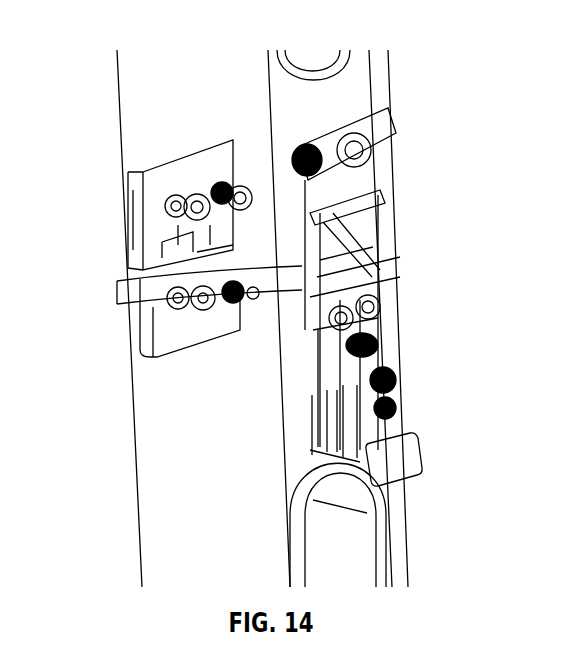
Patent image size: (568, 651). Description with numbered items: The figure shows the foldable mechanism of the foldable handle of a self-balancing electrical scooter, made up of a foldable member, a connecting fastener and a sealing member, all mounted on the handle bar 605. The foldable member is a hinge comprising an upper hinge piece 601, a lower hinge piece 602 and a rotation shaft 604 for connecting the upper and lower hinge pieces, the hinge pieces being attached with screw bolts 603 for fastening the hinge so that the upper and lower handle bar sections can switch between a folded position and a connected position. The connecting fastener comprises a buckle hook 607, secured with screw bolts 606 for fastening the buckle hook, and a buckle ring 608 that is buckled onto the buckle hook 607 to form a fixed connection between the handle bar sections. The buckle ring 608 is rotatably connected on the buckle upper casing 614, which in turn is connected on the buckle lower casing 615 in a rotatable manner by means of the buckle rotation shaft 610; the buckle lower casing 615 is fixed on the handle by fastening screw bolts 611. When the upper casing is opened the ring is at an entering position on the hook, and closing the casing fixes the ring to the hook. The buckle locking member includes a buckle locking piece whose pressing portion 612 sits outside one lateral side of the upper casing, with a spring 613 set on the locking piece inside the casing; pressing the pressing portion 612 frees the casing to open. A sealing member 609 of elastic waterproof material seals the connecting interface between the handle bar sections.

The upper hinge piece 601 is at (215, 170).
The lower hinge piece 602 is at (165, 298).
The screw bolts for fastening the hinge 603 is at (170, 192).
The rotation shaft for connecting the upper and lower hinge pieces 604 is at (167, 240).
The handle bar 605 is at (340, 127).
The screw bolts for fastening the buckle hook 606 is at (372, 140).
The buckle hook 607 is at (348, 180).
The buckle ring 608 is at (395, 229).
The sealing member 609 is at (412, 238).
The buckle rotation shaft 610 is at (382, 299).
The fastening screw bolts for fastening the buckle lower casing 611 is at (410, 335).
The buckle locking piece pressing portion 612 is at (410, 390).
The spring set on the buckle locking piece 613 is at (410, 372).
The buckle upper casing 614 is at (412, 422).
The buckle lower casing 615 is at (392, 256).